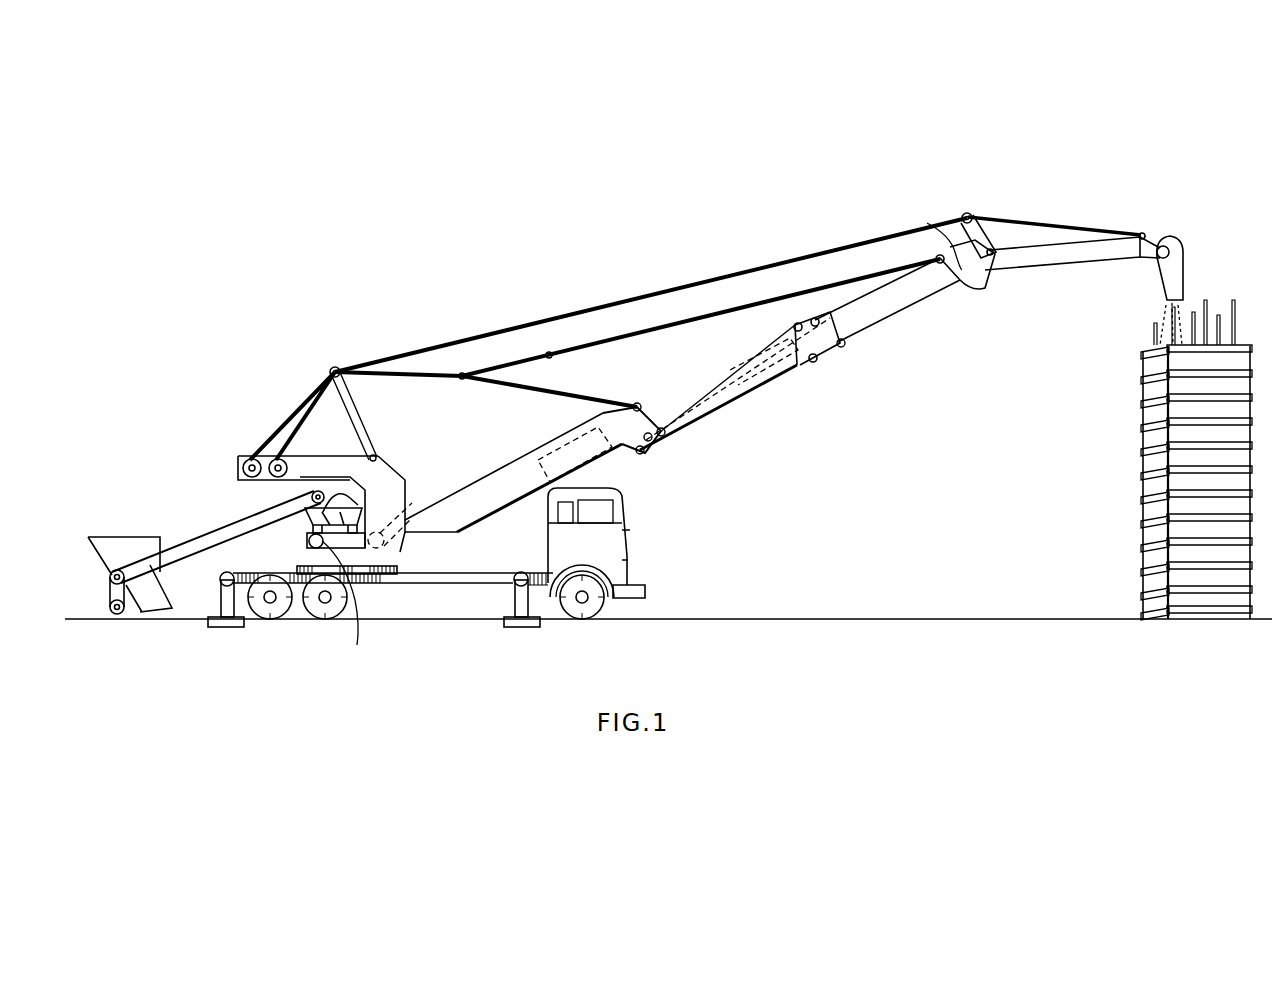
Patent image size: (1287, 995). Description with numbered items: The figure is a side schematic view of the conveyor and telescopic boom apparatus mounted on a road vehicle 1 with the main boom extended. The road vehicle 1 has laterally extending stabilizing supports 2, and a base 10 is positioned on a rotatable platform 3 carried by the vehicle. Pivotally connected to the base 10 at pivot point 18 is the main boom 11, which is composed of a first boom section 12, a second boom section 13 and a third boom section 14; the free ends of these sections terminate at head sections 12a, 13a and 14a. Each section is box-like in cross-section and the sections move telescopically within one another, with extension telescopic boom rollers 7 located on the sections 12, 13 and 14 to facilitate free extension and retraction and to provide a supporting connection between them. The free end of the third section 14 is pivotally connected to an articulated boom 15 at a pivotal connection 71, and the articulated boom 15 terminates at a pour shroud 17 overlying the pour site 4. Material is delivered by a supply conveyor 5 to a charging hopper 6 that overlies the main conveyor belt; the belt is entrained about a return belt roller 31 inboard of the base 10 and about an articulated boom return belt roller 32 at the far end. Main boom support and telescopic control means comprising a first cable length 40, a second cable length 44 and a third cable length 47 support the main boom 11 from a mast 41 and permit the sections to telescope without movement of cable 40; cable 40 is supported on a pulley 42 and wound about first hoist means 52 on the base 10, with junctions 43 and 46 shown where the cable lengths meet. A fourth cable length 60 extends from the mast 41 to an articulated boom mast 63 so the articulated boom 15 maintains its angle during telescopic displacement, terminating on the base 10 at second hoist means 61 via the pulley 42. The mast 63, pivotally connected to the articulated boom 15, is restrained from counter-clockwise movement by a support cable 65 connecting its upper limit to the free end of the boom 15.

The road vehicle 1 is at (437, 582).
The stabilizing supports 2 is at (220, 604).
The rotatable platform 3 is at (400, 565).
The pour site 4 is at (1142, 370).
The material supply conveyor 5 is at (218, 538).
The charging hopper 6 is at (307, 521).
The extension telescopic boom rollers 7 is at (663, 418).
The base 10 is at (396, 476).
The main boom 11 is at (700, 423).
The first boom section 12 is at (530, 453).
The head section 12a is at (654, 455).
The second boom section 13 is at (722, 398).
The head section 13a is at (822, 350).
The third boom section 14 is at (873, 324).
The head section 14a is at (962, 275).
The articulated boom 15 is at (1086, 270).
The pour shroud 17 is at (1160, 295).
The pivot point 18 is at (408, 500).
The return belt roller 31 is at (356, 600).
The articulated boom return belt roller 32 is at (1164, 244).
The first cable length 40 is at (305, 408).
The mast 41 is at (373, 422).
The pulley 42 is at (338, 366).
The strut junction 43 is at (462, 382).
The second cable length 44 is at (570, 388).
The strut junction 46 is at (552, 353).
The third cable length 47 is at (730, 318).
The first hoist means 52 is at (288, 470).
The fourth cable length 60 is at (512, 328).
The second hoist means 61 is at (243, 460).
The articulated boom mast 63 is at (985, 212).
The support cable 65 is at (1056, 225).
The pivotal connection 71 is at (927, 223).